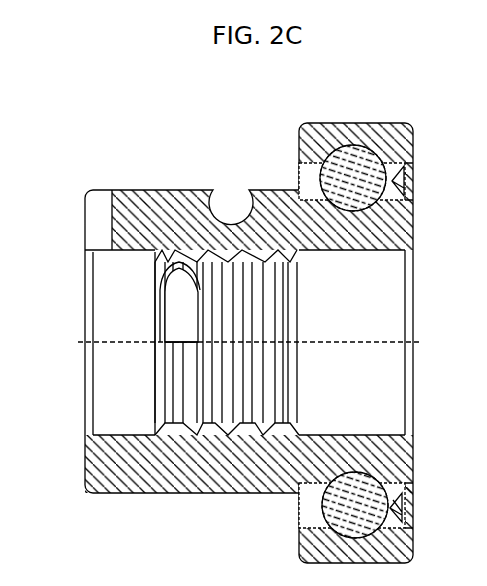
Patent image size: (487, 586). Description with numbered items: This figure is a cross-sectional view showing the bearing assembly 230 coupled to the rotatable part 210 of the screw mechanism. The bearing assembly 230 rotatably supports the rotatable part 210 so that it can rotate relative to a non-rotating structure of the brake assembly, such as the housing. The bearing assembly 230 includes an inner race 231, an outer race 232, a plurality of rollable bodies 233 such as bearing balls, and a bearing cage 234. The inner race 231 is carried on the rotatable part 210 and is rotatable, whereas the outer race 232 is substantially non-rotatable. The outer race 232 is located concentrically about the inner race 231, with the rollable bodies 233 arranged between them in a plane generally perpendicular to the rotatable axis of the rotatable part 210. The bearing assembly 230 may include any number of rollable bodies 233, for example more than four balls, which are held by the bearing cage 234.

The rotatable part 210 is at (132, 479).
The bearing assembly 230 is at (307, 210).
The inner race 231 is at (352, 214).
The outer race 232 is at (354, 506).
The rollable bodies 233 is at (332, 496).
The bearing cage 234 is at (394, 508).